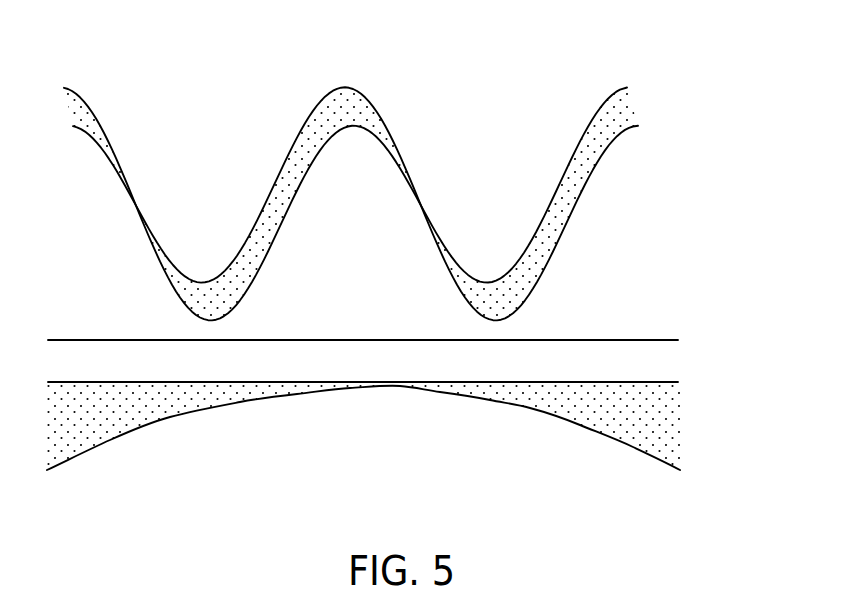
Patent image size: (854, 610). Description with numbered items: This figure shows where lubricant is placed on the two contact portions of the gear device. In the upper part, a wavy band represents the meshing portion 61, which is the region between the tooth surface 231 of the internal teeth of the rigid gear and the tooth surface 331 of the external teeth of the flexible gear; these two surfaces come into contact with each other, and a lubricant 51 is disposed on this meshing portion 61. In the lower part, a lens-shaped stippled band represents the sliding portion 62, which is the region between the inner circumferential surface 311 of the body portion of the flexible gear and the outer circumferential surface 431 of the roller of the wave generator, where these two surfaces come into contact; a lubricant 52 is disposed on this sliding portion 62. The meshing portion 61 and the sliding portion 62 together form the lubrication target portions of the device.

The tooth surface 231 is at (353, 92).
The tooth surface 331 is at (355, 125).
The meshing portion 61 is at (303, 144).
The lubricant 51 is at (398, 136).
The inner circumferential surface 311 is at (610, 383).
The outer circumferential surface 431 is at (637, 446).
The sliding portion 62 is at (172, 400).
The lubricant 52 is at (496, 393).